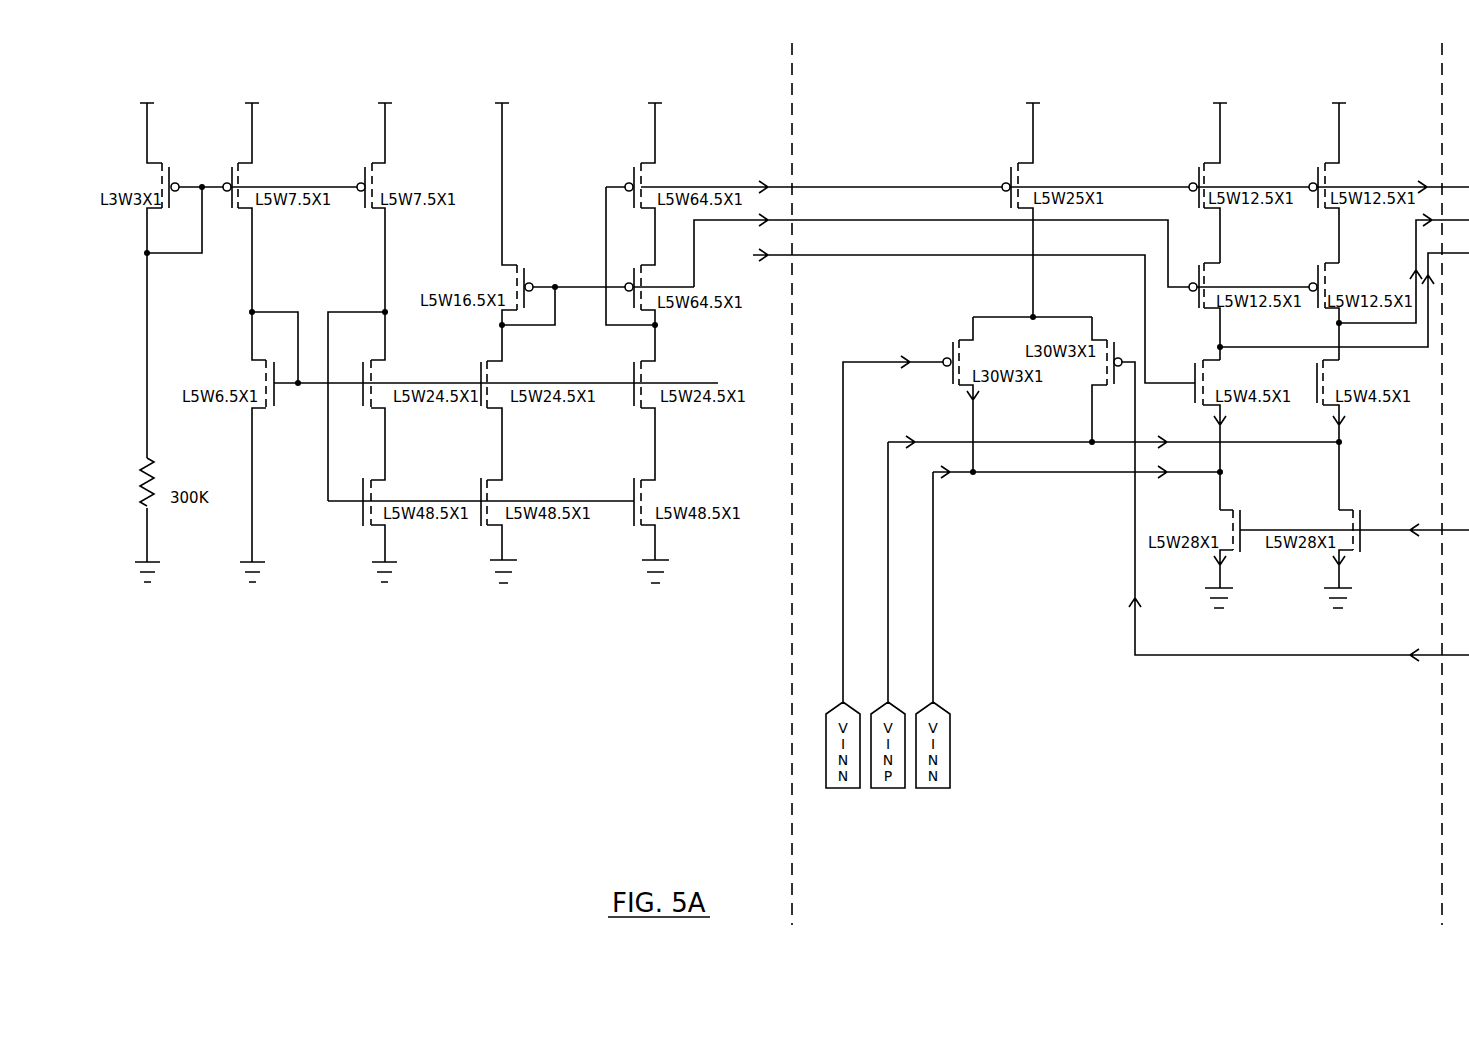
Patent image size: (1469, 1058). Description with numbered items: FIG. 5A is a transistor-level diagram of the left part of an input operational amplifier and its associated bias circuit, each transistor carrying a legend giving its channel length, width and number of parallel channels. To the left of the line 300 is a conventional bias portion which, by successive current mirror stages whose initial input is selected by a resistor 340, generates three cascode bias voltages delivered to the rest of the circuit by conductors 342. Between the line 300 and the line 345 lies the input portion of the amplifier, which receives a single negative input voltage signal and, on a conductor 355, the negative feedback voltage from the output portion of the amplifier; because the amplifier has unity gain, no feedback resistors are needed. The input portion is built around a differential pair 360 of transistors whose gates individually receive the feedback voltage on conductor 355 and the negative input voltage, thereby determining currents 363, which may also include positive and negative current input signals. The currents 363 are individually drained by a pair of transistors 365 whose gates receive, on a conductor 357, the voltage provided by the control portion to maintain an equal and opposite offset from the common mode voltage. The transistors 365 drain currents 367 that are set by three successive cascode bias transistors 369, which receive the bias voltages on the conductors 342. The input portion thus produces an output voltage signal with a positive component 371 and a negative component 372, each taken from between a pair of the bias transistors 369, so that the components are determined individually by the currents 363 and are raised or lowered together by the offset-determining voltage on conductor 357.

The line 300 is at (795, 90).
The resistor 340 is at (141, 488).
The conductors 342 is at (820, 272).
The line 345 is at (1440, 70).
The conductor 355 is at (1388, 655).
The conductor 357 is at (1432, 535).
The differential pair 360 is at (1056, 315).
The currents 363 is at (1170, 437).
The pair of transistors 365 is at (1340, 517).
The currents 367 is at (1339, 428).
The cascode bias transistors 369 is at (1318, 377).
The positive component 371 is at (1433, 220).
The negative component 372 is at (1427, 258).